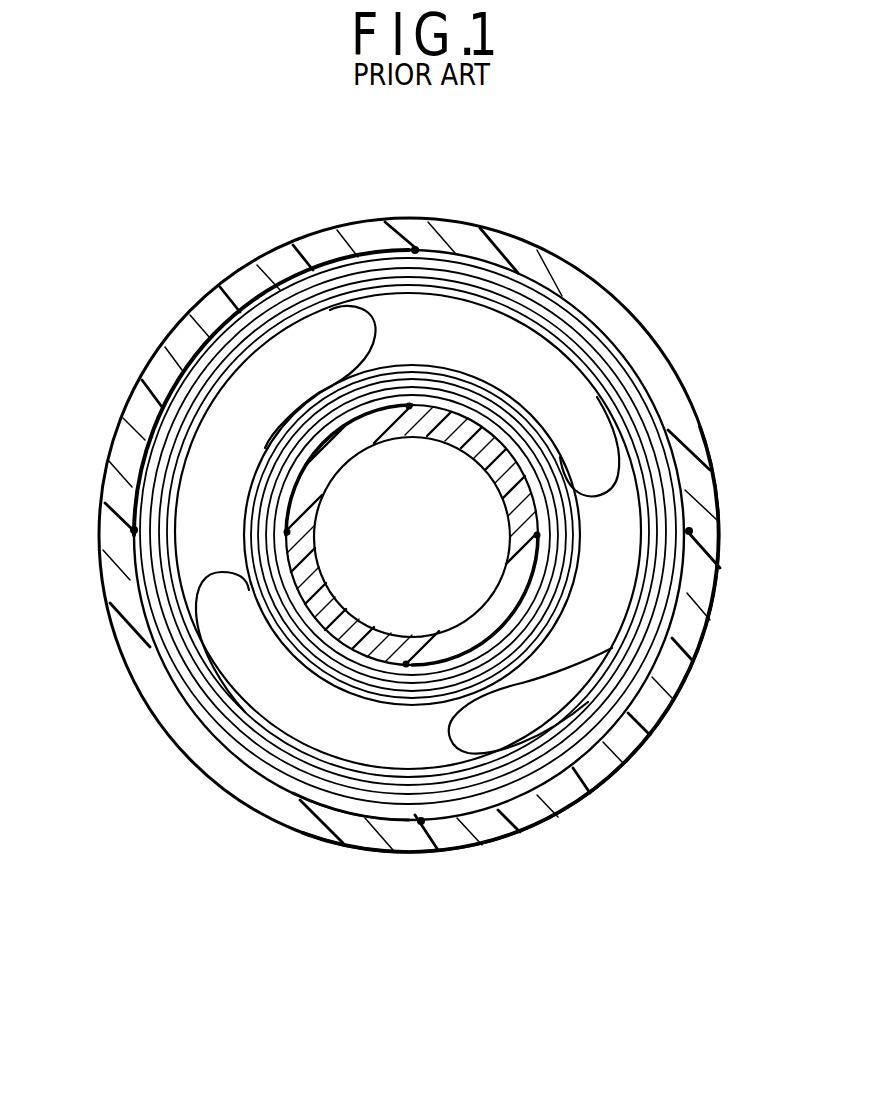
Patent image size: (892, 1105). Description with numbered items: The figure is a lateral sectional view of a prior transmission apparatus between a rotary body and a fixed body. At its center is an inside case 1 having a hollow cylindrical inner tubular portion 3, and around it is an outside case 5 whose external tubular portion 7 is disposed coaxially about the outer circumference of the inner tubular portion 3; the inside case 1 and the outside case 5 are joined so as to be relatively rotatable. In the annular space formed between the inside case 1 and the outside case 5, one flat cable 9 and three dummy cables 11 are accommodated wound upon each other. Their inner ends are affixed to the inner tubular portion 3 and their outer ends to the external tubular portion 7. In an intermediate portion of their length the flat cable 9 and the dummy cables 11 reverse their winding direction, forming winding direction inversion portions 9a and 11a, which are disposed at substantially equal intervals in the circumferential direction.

The inside case 1 is at (487, 497).
The inner tubular portion 3 is at (300, 548).
The outside case 5 is at (692, 381).
The external tubular portion 7 is at (625, 327).
The flat cable 9 is at (553, 297).
The winding direction inversion portion 9a is at (607, 497).
The dummy cables 11 is at (297, 467).
The winding direction inversion portions 11a is at (376, 330).